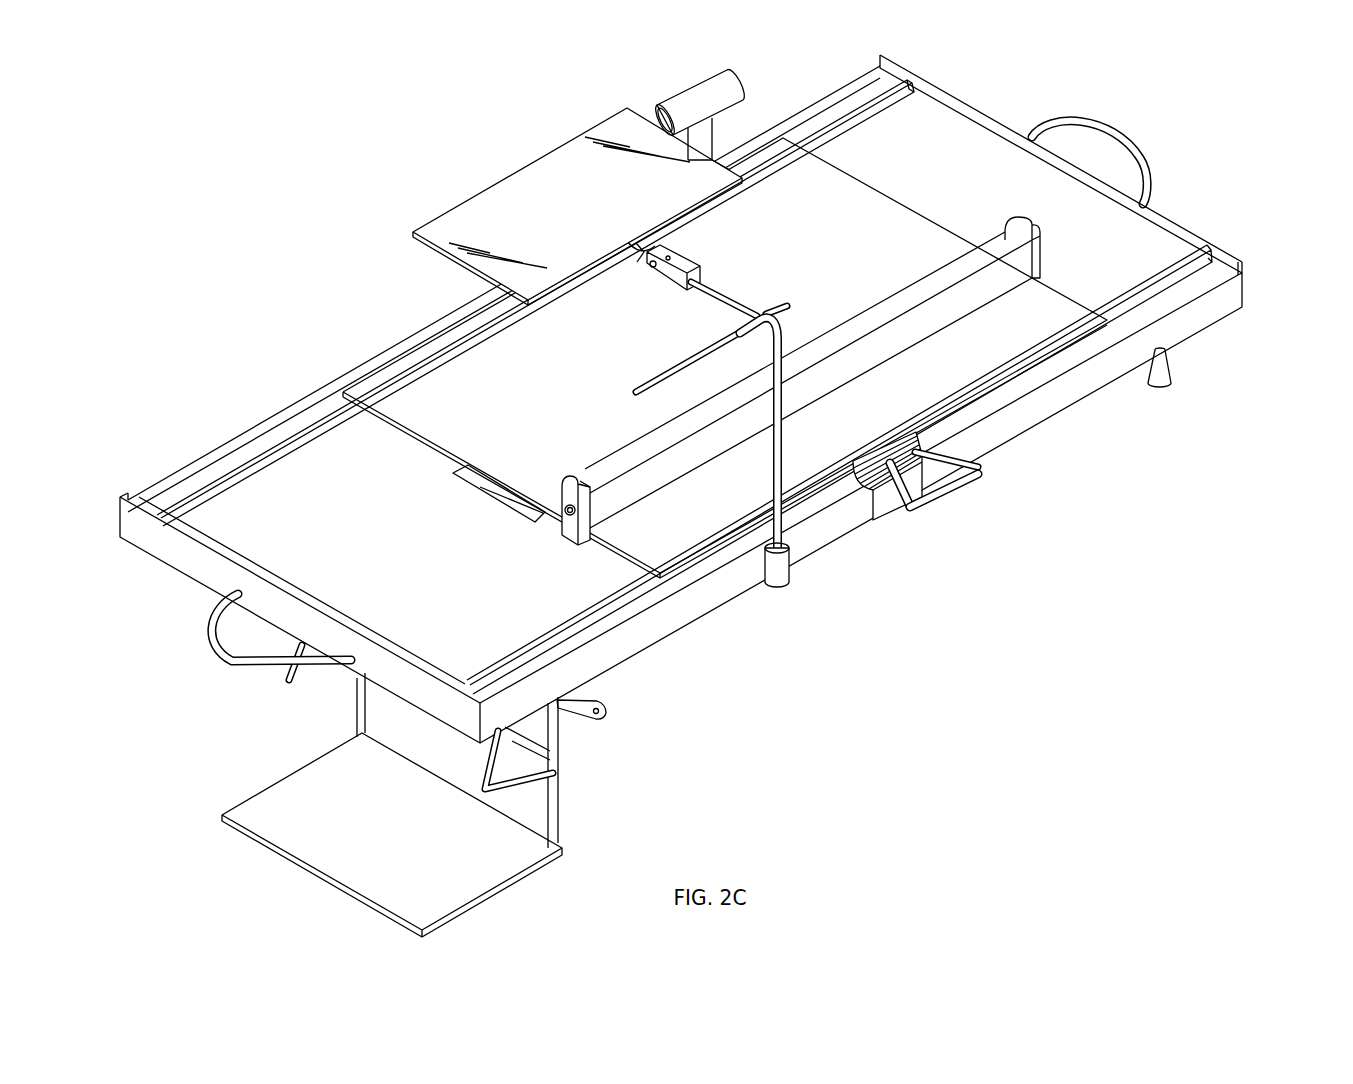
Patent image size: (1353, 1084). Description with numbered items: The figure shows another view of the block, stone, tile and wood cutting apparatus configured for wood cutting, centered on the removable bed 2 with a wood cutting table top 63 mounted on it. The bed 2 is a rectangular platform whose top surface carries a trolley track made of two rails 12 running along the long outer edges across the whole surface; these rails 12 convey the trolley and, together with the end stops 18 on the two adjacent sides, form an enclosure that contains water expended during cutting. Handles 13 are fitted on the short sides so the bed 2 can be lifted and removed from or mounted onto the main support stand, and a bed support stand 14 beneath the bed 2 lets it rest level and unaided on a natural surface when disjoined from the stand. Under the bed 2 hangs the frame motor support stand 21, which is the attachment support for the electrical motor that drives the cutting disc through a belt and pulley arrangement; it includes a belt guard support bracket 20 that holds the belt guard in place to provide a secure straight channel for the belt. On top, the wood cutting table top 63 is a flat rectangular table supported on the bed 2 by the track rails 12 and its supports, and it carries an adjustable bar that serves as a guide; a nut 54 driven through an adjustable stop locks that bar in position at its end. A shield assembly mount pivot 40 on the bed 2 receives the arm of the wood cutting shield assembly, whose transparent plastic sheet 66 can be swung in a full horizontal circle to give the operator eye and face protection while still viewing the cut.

The bed 2 is at (386, 557).
The trolley track rails 12 is at (240, 459).
The handles 13 is at (216, 635).
The bed support stand 14 is at (1170, 362).
The end stops 18 is at (197, 547).
The belt guard support bracket 20 is at (603, 715).
The frame motor support stand 21 is at (508, 867).
The shield assembly mount pivot 40 is at (792, 572).
The nut 54 is at (568, 513).
The wood cutting table top 63 is at (877, 220).
The transparent plastic sheet 66 is at (535, 188).